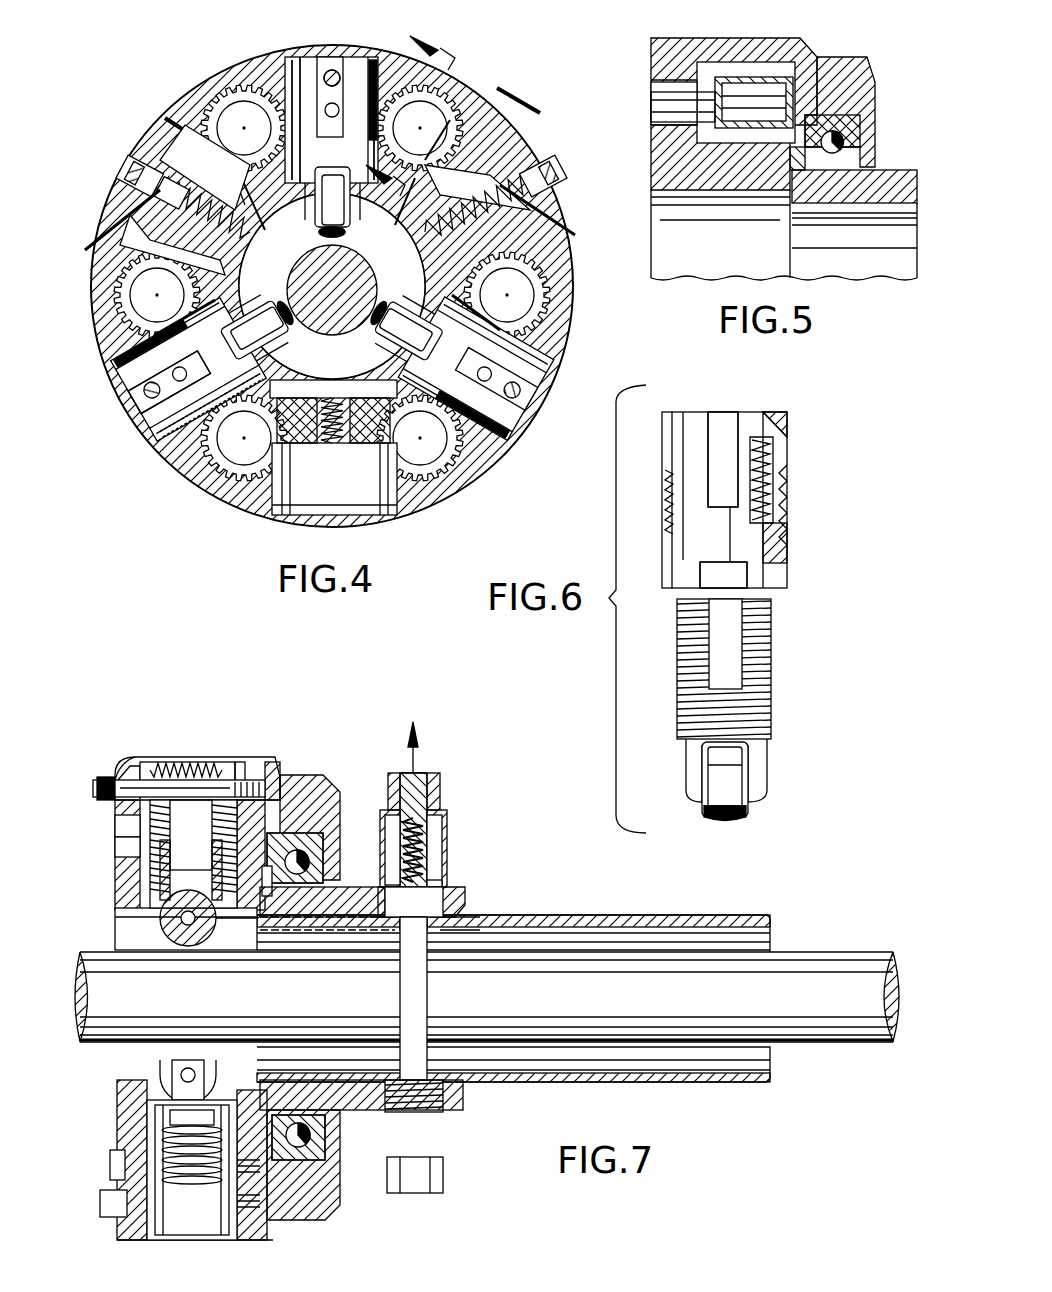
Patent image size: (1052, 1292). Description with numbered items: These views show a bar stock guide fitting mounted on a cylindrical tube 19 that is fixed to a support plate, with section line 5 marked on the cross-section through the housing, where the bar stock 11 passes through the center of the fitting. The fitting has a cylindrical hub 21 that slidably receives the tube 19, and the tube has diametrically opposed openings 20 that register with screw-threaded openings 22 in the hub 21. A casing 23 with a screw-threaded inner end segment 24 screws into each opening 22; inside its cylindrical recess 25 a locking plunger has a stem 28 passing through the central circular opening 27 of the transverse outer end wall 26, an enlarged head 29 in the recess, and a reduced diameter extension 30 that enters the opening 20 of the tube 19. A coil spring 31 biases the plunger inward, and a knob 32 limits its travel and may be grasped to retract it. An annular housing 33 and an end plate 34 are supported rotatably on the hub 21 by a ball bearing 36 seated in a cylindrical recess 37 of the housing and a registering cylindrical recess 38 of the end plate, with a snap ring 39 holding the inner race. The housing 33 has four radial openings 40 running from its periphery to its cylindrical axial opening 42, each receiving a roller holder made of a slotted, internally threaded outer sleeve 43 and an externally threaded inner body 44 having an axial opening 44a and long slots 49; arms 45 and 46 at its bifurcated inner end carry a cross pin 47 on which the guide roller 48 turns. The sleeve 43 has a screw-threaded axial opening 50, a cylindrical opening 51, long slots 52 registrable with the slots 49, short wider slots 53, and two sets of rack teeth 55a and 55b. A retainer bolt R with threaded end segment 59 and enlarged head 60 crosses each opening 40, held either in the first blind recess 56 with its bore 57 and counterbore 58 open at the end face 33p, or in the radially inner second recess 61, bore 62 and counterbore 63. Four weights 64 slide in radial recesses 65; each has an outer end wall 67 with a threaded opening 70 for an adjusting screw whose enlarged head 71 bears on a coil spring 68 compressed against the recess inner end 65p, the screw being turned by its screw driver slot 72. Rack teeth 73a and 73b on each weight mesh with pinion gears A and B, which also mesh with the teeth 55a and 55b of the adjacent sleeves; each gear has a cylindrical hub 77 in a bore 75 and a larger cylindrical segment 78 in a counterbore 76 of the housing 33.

In FIG. 4, the section line 5— 5 is at (417, 126).
In FIG. 4, the shaft 11 is at (370, 275).
In FIG. 5, the cylindrical tube 19 is at (830, 228).
In FIG. 7, the cylindrical tube 19 is at (654, 1083).
In FIG. 7, the openings 20 is at (395, 935).
In FIG. 5, the hub 21 is at (890, 175).
In FIG. 7, the hub 21 is at (350, 888).
In FIG. 7, the screw-threaded openings 22 is at (462, 905).
In FIG. 7, the casing 23 is at (445, 825).
In FIG. 7, the screw-threaded inner end segment 24 is at (385, 900).
In FIG. 7, the cylindrical recess 25 is at (445, 845).
In FIG. 7, the transverse outer end wall 26 is at (447, 815).
In FIG. 7, the central circular opening 27 is at (388, 822).
In FIG. 7, the stem 28 is at (425, 860).
In FIG. 7, the enlarged head 29 is at (430, 935).
In FIG. 7, the reduced diameter extension 30 is at (413, 930).
In FIG. 7, the coil spring 31 is at (445, 885).
In FIG. 7, the knob 32 is at (420, 775).
In FIG. 4, the annular housing 33 is at (478, 100).
In FIG. 5, the annular housing 33 is at (738, 48).
In FIG. 7, the annular housing 33 is at (265, 760).
In FIG. 7, the end face 33p is at (118, 885).
In FIG. 5, the end plate 34 is at (860, 70).
In FIG. 7, the end plate 34 is at (325, 1175).
In FIG. 5, the ball bearing 36 is at (845, 130).
In FIG. 7, the ball bearing 36 is at (300, 1150).
In FIG. 7, the cylindrical recess 37 is at (315, 830).
In FIG. 7, the cylindrical recess 38 is at (302, 850).
In FIG. 5, the snap ring 39 is at (800, 165).
In FIG. 7, the snap ring 39 is at (272, 1105).
In FIG. 4, the radial openings 40 is at (300, 58).
In FIG. 7, the radial openings 40 is at (150, 762).
In FIG. 4, the cylindrical axial opening 42 is at (328, 378).
In FIG. 4, the outer sleeve 43 is at (360, 60).
In FIG. 6, the outer sleeve 43 is at (772, 447).
In FIG. 7, the outer sleeve 43 is at (192, 1222).
In FIG. 4, the inner body 44 is at (175, 440).
In FIG. 6, the inner body 44 is at (773, 690).
In FIG. 7, the inner body 44 is at (165, 880).
In FIG. 7, the cylindrical axial opening 44a is at (168, 858).
In FIG. 6, the arm 45 is at (686, 780).
In FIG. 6, the arm 46 is at (768, 782).
In FIG. 6, the cross pin 47 is at (748, 770).
In FIG. 7, the cross pin 47 is at (162, 925).
In FIG. 4, the guide roller 48 is at (348, 233).
In FIG. 6, the guide roller 48 is at (724, 820).
In FIG. 7, the guide roller 48 is at (232, 920).
In FIG. 4, the slots 49 is at (172, 381).
In FIG. 6, the slots 49 is at (738, 612).
In FIG. 7, the slots 49 is at (212, 812).
In FIG. 6, the screw-threaded axial opening 50 is at (775, 460).
In FIG. 7, the screw-threaded axial opening 50 is at (208, 762).
In FIG. 6, the cylindrical opening 51 is at (775, 553).
In FIG. 4, the slots 52 is at (338, 74).
In FIG. 6, the slots 52 is at (735, 440).
In FIG. 6, the short slots 53 is at (706, 580).
In FIG. 4, the rack teeth 55a is at (372, 140).
In FIG. 6, the rack teeth 55a is at (788, 495).
In FIG. 4, the rack teeth 55b is at (290, 85).
In FIG. 7, the first blind screw-threaded recess 56 is at (272, 770).
In FIG. 7, the cylindrical bore 57 is at (128, 765).
In FIG. 7, the counterbore 58 is at (118, 772).
In FIG. 7, the screw-threaded inner end segment 59 is at (240, 762).
In FIG. 7, the enlarged head 60 is at (97, 790).
In FIG. 7, the second blind screw-threaded recess 61 is at (265, 875).
In FIG. 7, the bore 62 is at (125, 850).
In FIG. 7, the counterbore 63 is at (118, 826).
In FIG. 4, the weight 64 is at (160, 130).
In FIG. 4, the radial recess 65 is at (165, 118).
In FIG. 4, the inner end of radial recess 65p is at (262, 172).
In FIG. 4, the transverse end wall 67 is at (125, 185).
In FIG. 4, the coil spring 68 is at (255, 230).
In FIG. 4, the screw-threaded opening 70 is at (135, 178).
In FIG. 4, the enlarged cylindrical head 71 is at (160, 150).
In FIG. 4, the screw driver slot 72 is at (150, 175).
In FIG. 4, the rack teeth 73a is at (325, 217).
In FIG. 4, the rack teeth 73b is at (205, 167).
In FIG. 5, the bore 75 is at (665, 85).
In FIG. 5, the counterbore 76 is at (725, 130).
In FIG. 5, the cylindrical hub 77 is at (660, 116).
In FIG. 5, the larger diameter cylindrical segment 78 is at (775, 135).
In FIG. 4, the pinion gear A is at (440, 95).
In FIG. 5, the pinion gear A is at (752, 65).
In FIG. 4, the pinion gear B is at (240, 100).
In FIG. 4, the retainer bolt R is at (331, 70).